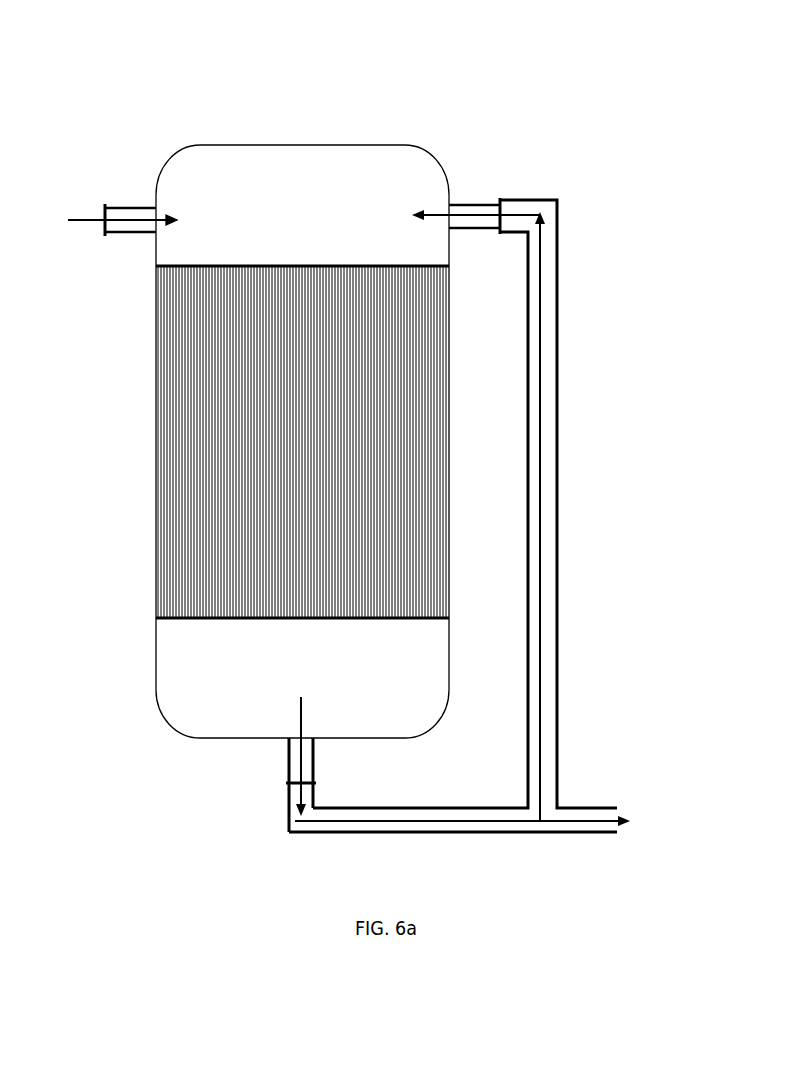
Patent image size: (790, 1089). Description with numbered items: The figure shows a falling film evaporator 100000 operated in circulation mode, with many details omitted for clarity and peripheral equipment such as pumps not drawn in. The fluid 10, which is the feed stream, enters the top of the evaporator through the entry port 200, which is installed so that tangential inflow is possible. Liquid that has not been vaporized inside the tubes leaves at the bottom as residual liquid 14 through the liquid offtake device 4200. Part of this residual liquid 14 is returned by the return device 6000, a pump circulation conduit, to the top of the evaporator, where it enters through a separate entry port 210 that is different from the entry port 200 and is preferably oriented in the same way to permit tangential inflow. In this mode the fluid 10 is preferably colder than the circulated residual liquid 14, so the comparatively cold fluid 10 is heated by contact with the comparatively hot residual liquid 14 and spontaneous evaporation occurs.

The falling film evaporator 100000 is at (256, 75).
The fluid 10 is at (82, 217).
The entry port 200 is at (127, 208).
The separate entry port 210 is at (462, 205).
The residual liquid 14 is at (527, 210).
The return device 6000 is at (557, 493).
The liquid offtake device 4200 is at (287, 756).